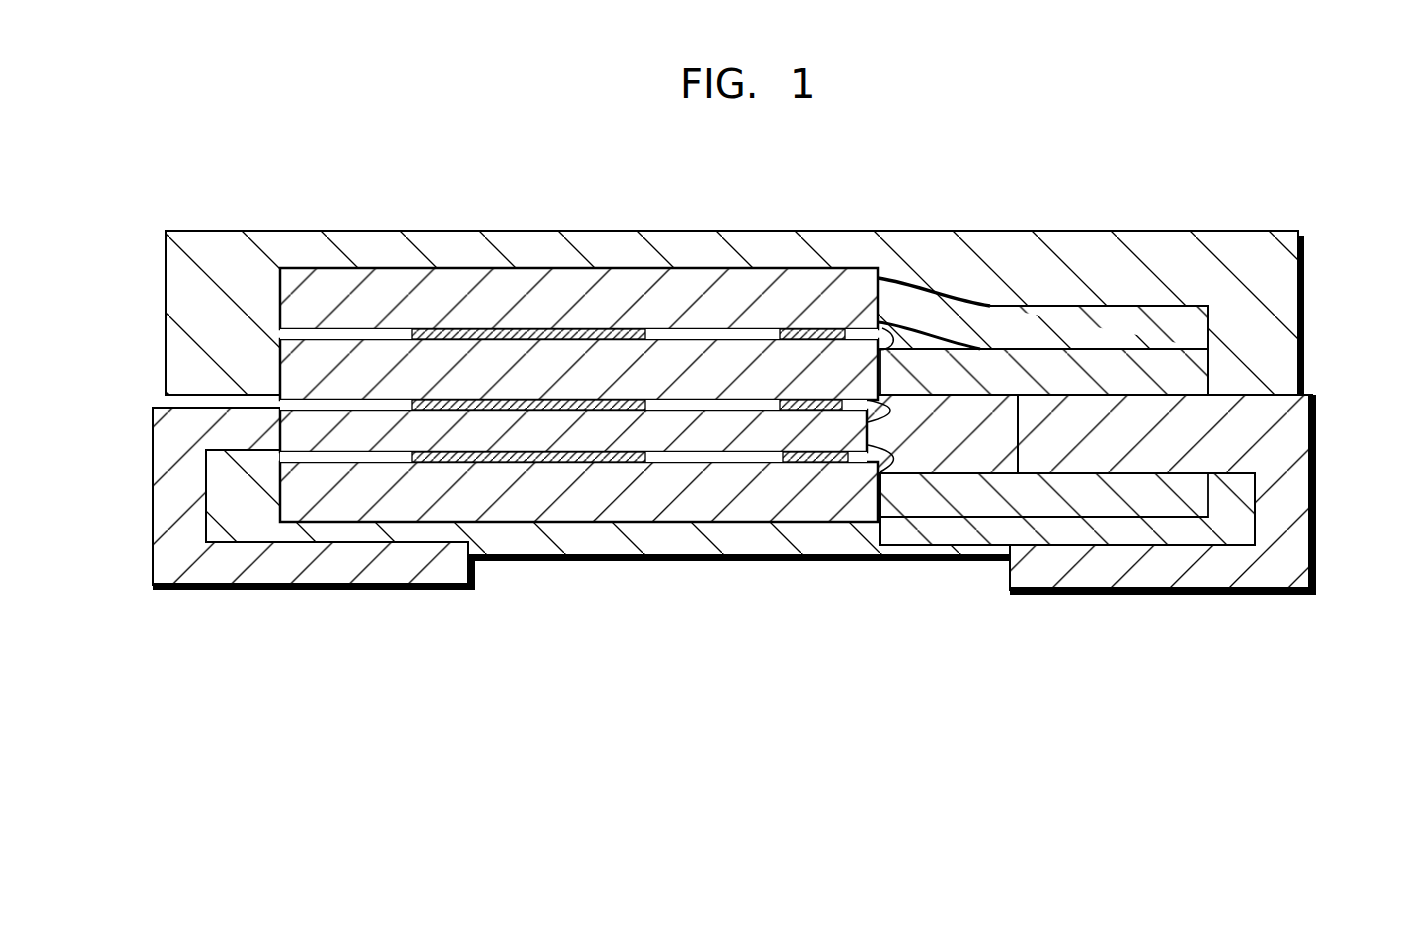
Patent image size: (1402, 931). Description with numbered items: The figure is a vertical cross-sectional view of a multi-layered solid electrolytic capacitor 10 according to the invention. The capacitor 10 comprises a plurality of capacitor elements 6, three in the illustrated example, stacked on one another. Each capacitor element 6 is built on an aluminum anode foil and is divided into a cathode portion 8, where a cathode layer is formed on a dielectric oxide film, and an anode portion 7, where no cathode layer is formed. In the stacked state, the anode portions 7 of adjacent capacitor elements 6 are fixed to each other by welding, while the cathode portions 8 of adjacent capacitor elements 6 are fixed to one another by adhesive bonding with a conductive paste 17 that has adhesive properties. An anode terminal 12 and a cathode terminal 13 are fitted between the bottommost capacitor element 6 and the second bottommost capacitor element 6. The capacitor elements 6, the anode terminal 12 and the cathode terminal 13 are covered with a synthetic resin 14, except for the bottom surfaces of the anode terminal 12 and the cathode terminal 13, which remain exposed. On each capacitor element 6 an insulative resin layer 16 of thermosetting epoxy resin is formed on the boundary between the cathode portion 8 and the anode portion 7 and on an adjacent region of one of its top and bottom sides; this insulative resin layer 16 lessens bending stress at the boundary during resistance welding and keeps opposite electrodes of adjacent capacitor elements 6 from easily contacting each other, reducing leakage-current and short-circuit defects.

The capacitor element 6 is at (276, 491).
The anode portion 7 is at (1148, 327).
The cathode portion 8 is at (722, 307).
The multi-layered solid electrolytic capacitor 10 is at (258, 165).
The anode terminal 12 is at (1292, 486).
The cathode terminal 13 is at (167, 555).
The synthetic resin 14 is at (187, 270).
The insulative resin layer 16 is at (847, 330).
The conductive paste 17 is at (573, 338).